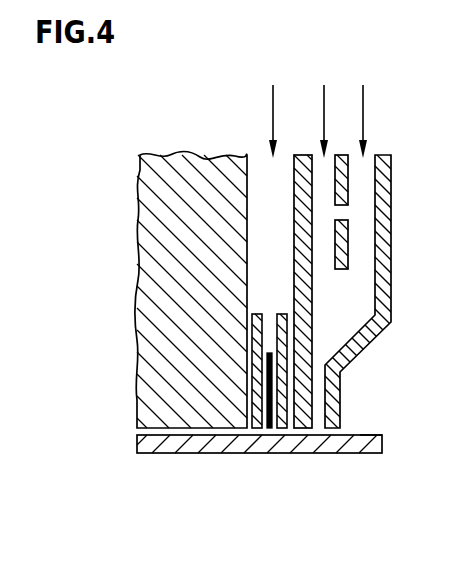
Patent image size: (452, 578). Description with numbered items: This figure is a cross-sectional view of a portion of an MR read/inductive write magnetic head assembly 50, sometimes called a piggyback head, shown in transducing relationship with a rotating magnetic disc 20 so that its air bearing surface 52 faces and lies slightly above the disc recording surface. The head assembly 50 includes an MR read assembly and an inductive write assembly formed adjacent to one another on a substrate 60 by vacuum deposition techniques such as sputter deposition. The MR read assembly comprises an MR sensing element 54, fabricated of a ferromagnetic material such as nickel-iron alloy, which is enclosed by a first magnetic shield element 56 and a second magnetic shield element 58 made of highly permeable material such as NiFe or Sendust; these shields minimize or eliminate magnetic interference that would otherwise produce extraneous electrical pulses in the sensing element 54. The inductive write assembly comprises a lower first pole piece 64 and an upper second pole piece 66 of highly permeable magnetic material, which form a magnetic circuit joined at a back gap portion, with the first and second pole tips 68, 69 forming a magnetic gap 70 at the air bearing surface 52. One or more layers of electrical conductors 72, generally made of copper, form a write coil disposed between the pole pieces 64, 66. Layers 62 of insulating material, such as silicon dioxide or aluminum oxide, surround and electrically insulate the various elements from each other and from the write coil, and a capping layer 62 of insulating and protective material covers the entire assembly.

The rotating magnetic disc 20 is at (378, 445).
The magnetic head assembly 50 is at (110, 223).
The air bearing surface 52 is at (362, 437).
The MR sensing element 54 is at (270, 427).
The first magnetic shield element 56 is at (257, 427).
The second magnetic shield element 58 is at (283, 427).
The substrate 60 is at (138, 400).
The layers of insulating material 62 is at (318, 106).
The first pole piece 64 is at (293, 205).
The second pole piece 66 is at (389, 183).
The first pole tip 68 is at (305, 427).
The second pole tip 69 is at (333, 427).
The magnetic gap 70 is at (315, 418).
The electrical conductors 72 is at (342, 156).